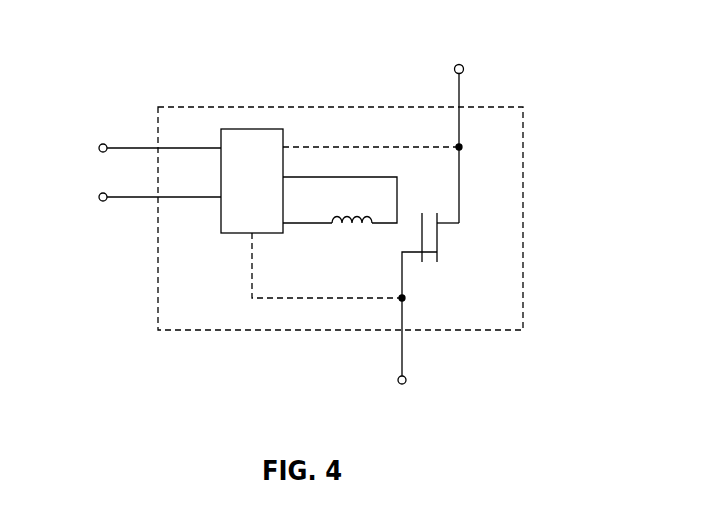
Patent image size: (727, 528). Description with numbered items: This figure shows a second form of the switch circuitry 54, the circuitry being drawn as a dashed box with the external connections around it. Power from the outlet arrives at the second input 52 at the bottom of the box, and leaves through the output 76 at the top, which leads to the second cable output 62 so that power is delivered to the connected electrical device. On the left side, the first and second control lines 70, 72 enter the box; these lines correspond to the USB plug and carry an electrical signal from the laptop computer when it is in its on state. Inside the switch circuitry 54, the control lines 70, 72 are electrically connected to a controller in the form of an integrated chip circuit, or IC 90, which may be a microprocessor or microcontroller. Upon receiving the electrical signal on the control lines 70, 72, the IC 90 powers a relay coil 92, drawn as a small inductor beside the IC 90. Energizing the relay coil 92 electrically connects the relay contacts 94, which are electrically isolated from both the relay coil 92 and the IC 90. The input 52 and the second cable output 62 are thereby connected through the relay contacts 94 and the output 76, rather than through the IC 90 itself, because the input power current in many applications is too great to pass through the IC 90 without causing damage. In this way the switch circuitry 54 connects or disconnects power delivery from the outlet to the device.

The second input 52 is at (407, 391).
The switch circuitry 54 is at (543, 203).
The second cable output 62 is at (454, 57).
The first control line 70 is at (99, 204).
The second control line 72 is at (99, 141).
The output 76 is at (461, 92).
The integrated chip circuit (IC) 90 is at (251, 129).
The relay coil 92 is at (345, 230).
The relay contacts 94 is at (444, 249).